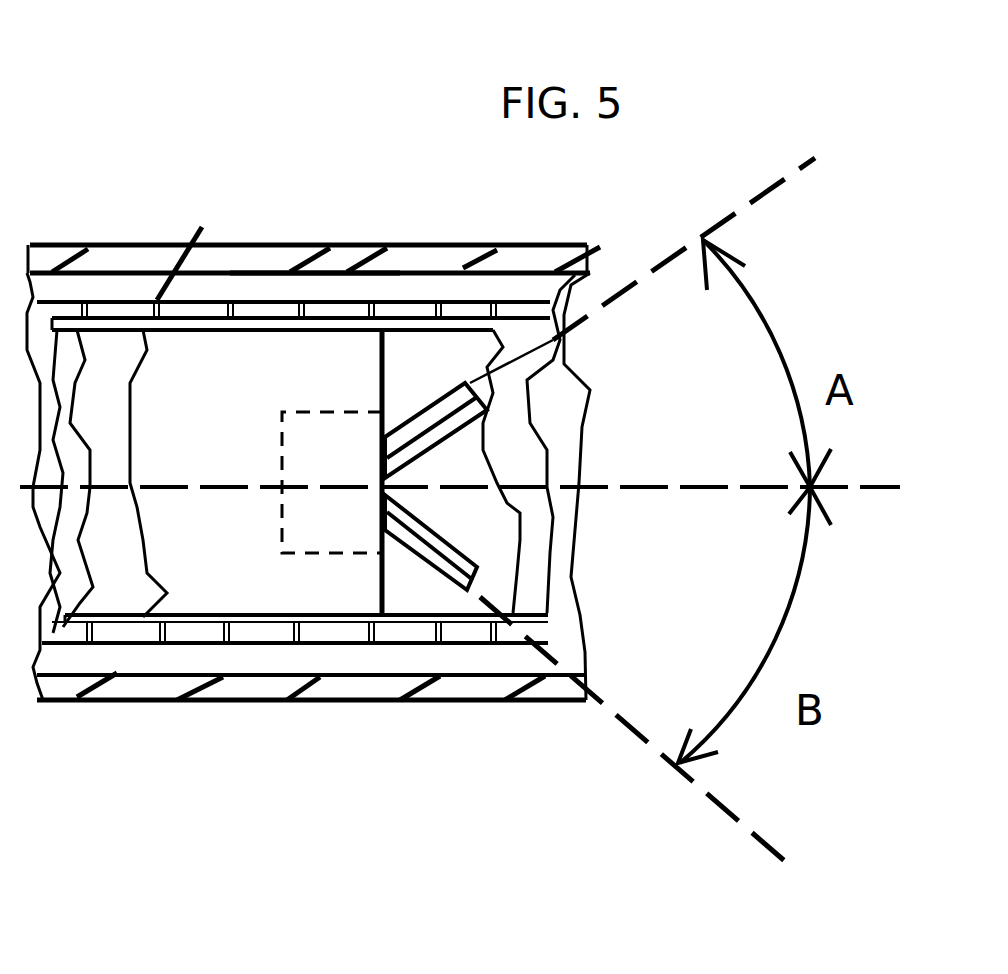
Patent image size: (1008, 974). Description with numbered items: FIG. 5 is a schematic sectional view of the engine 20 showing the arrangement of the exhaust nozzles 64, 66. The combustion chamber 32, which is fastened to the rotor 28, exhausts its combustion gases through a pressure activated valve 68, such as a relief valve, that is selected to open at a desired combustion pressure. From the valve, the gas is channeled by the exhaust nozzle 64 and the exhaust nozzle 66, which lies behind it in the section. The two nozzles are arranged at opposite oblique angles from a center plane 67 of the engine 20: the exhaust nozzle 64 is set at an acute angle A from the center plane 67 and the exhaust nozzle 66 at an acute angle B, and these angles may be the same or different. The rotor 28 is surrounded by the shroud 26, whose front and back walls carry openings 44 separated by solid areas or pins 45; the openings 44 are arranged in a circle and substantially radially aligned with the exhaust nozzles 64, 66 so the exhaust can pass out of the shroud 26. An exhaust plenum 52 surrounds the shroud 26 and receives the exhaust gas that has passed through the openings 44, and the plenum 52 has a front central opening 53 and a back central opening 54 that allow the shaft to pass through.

The engine 20 is at (143, 132).
The shroud 26 is at (513, 298).
The rotor 28 is at (468, 462).
The combustion chamber 32 is at (230, 444).
The openings 44 is at (123, 310).
The pins 45 is at (230, 302).
The exhaust plenum 52 is at (168, 243).
The front central opening 53 is at (295, 705).
The back central opening 54 is at (298, 262).
The exhaust nozzle 64 is at (427, 400).
The exhaust nozzle 66 is at (417, 558).
The center plane 67 is at (707, 497).
The pressure activated valve 68 is at (285, 412).